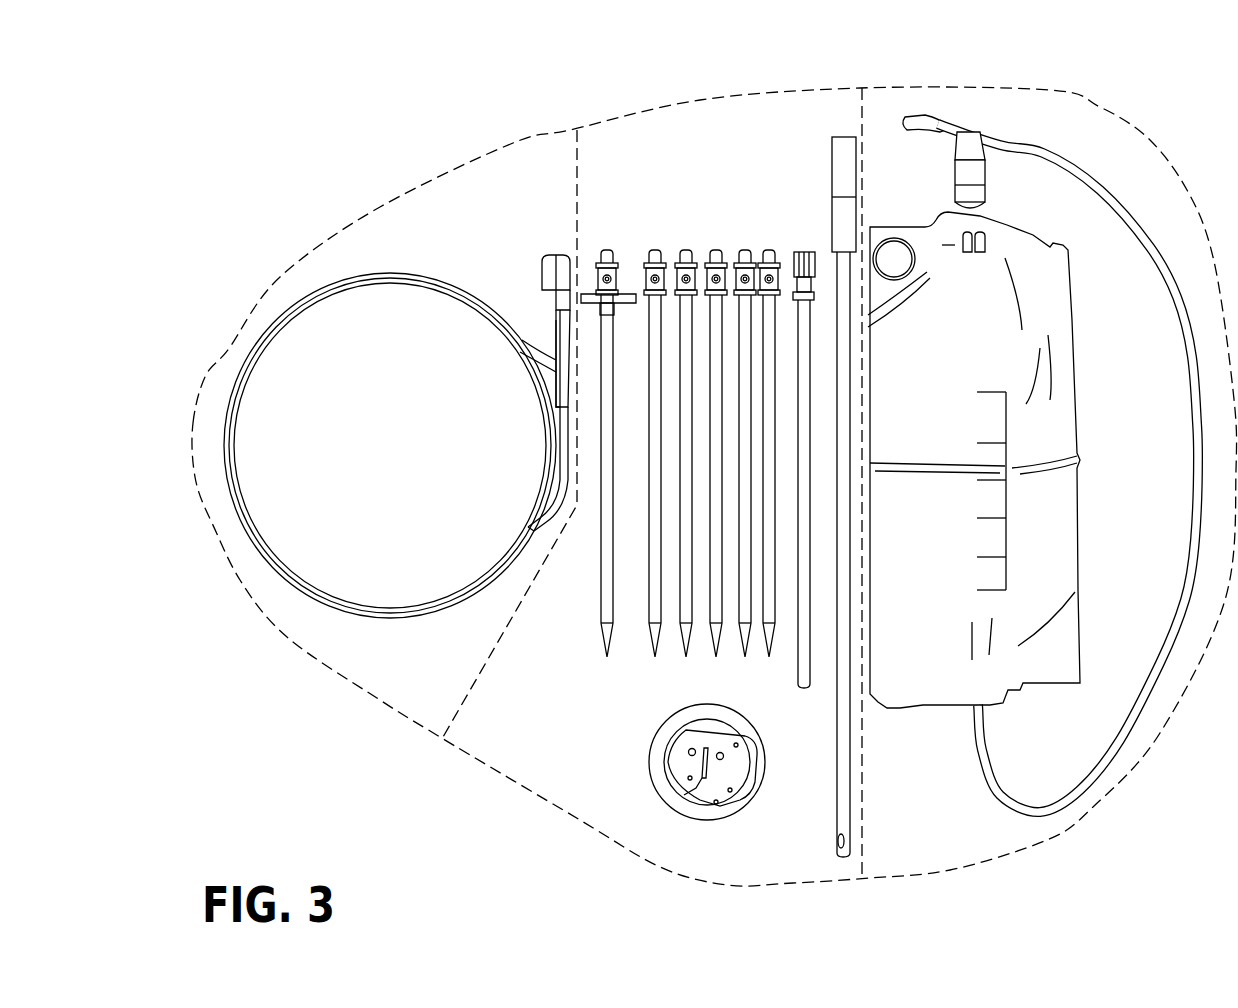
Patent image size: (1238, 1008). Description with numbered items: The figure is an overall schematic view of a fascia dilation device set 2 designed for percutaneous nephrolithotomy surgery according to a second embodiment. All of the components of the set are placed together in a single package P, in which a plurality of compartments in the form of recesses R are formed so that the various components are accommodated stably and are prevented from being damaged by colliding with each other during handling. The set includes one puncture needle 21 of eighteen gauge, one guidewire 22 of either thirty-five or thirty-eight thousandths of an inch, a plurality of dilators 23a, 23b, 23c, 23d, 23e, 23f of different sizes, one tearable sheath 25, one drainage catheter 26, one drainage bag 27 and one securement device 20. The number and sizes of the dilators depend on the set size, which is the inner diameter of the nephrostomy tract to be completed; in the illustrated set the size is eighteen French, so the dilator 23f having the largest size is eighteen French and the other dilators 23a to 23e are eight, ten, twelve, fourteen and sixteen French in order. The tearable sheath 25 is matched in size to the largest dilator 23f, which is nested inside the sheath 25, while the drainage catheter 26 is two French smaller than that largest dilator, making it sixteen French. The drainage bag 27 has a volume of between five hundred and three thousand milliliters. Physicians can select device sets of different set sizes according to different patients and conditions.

The fascia dilation device set 2 is at (915, 45).
The package P is at (1035, 850).
The recesses R is at (547, 210).
The securement device 20 is at (765, 752).
The puncture needle 21 is at (822, 260).
The guidewire 22 is at (423, 276).
The dilator 23a is at (770, 250).
The dilator 23b is at (746, 250).
The dilator 23c is at (715, 250).
The dilator 23d is at (681, 250).
The dilator 23e is at (655, 250).
The dilator having the largest size 23f is at (603, 250).
The tearable sheath 25 is at (665, 410).
The drainage catheter 26 is at (856, 188).
The drainage bag 27 is at (1058, 163).